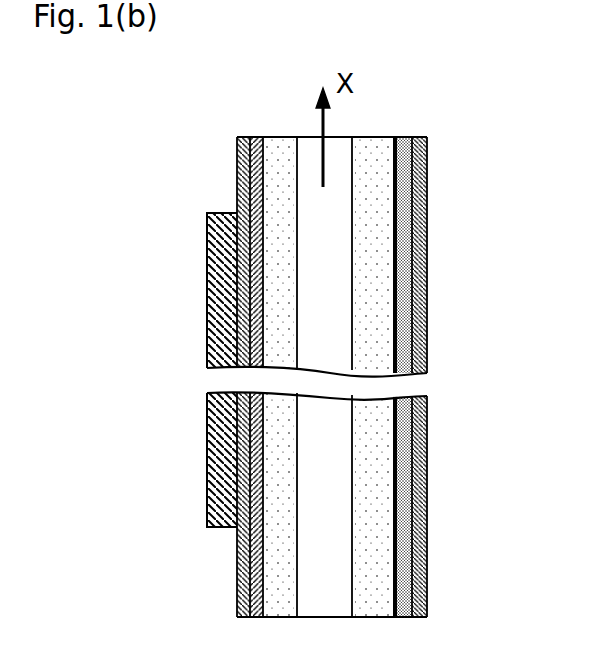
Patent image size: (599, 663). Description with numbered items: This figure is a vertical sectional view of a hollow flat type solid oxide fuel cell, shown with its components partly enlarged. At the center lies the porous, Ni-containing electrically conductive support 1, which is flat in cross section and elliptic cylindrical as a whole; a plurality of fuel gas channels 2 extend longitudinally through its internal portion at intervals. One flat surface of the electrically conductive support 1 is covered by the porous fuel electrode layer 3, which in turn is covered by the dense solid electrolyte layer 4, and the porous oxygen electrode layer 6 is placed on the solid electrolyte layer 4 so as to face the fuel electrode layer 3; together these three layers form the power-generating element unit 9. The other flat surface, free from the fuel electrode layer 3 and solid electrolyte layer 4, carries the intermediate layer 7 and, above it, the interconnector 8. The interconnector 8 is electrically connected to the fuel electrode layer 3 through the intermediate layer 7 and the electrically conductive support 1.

The electrically conductive support 1 is at (367, 147).
The fuel gas channels 2 is at (297, 158).
The fuel electrode layer 3 is at (257, 137).
The solid electrolyte layer 4 is at (240, 137).
The oxygen electrode layer 6 is at (214, 213).
The intermediate layer 7 is at (400, 207).
The interconnector 8 is at (422, 152).
The power-generating element unit 9 is at (207, 322).